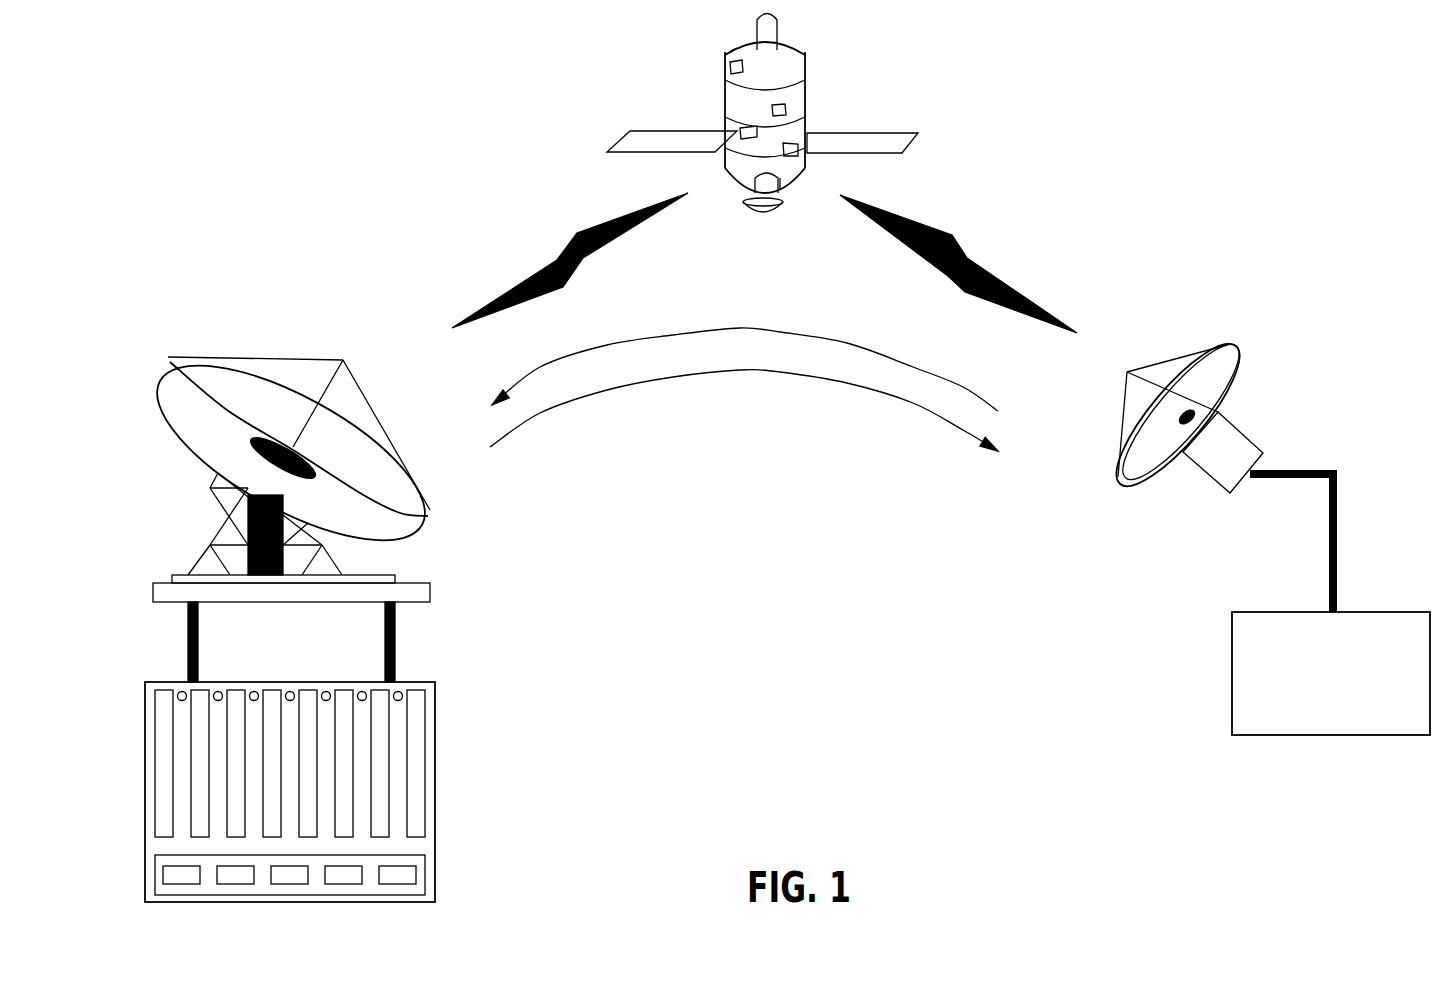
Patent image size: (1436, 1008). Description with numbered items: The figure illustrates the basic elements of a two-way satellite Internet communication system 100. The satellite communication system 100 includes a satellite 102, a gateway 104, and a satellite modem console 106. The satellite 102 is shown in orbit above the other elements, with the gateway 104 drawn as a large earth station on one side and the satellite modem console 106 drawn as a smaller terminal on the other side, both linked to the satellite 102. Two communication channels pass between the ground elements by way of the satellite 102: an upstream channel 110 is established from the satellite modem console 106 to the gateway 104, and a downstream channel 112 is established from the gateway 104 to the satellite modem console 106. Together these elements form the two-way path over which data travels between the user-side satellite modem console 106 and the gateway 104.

The satellite communication system 100 is at (1397, 89).
The satellite 102 is at (807, 67).
The gateway 104 is at (124, 309).
The satellite modem console 106 is at (1374, 428).
The upstream channel 110 is at (822, 338).
The downstream channel 112 is at (645, 380).